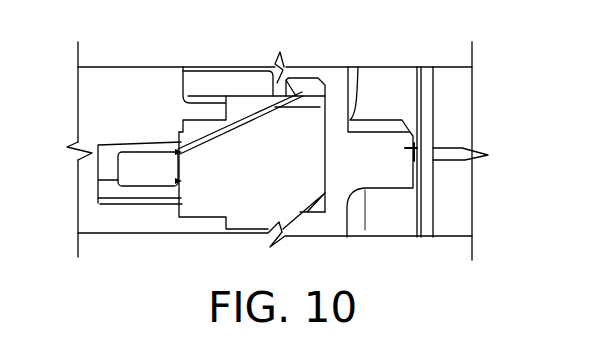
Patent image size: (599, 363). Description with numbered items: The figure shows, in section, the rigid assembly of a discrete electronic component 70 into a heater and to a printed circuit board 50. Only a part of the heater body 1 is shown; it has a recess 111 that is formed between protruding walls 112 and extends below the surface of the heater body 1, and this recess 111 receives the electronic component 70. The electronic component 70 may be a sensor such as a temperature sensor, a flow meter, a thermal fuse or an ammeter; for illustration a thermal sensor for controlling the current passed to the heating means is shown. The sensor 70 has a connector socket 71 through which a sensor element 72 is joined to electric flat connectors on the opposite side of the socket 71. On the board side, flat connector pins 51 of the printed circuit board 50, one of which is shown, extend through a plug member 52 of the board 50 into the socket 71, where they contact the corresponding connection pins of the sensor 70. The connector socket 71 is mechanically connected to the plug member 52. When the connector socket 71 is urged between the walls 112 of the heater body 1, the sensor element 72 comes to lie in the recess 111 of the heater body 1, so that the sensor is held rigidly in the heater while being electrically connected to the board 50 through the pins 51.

The heater body 1 is at (107, 100).
The recess 111 is at (108, 155).
The protruding walls 112 is at (213, 115).
The electronic component 70 is at (290, 133).
The connector socket 71 is at (210, 200).
The sensor element 72 is at (143, 173).
The printed circuit board 50 is at (420, 232).
The flat connector pins 51 is at (447, 155).
The plug member 52 is at (328, 223).